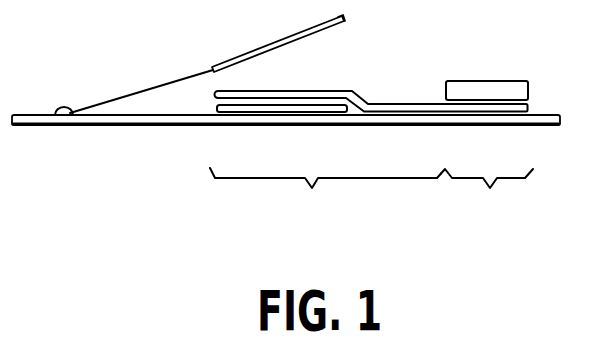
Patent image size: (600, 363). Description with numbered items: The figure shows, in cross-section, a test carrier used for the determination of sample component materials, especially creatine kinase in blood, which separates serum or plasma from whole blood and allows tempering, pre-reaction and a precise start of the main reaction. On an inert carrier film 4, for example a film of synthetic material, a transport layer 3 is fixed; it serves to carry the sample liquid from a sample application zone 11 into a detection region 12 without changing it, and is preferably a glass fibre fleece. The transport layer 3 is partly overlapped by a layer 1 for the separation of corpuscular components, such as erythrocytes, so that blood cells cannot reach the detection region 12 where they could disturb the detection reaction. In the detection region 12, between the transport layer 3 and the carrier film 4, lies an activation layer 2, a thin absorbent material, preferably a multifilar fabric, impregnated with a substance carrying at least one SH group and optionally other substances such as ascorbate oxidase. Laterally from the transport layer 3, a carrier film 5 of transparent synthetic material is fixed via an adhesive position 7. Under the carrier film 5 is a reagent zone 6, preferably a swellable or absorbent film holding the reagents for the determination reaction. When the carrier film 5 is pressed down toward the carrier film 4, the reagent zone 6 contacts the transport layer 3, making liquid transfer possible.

The layer for the separation of corpuscular components 1 is at (513, 84).
The activation layer 2 is at (294, 111).
The transport layer 3 is at (335, 92).
The carrier film 4 is at (543, 127).
The carrier film 5 is at (181, 69).
The reagent zone 6 is at (344, 23).
The adhesive position 7 is at (60, 109).
The sample application zone 11 is at (487, 196).
The detection region 12 is at (325, 196).